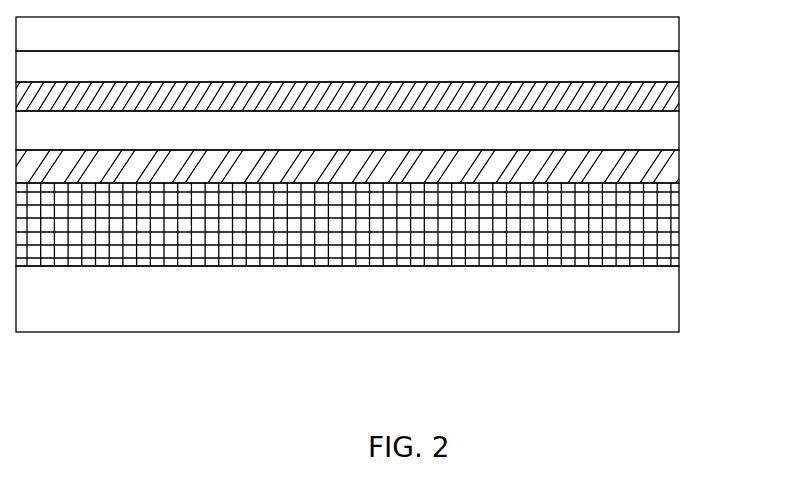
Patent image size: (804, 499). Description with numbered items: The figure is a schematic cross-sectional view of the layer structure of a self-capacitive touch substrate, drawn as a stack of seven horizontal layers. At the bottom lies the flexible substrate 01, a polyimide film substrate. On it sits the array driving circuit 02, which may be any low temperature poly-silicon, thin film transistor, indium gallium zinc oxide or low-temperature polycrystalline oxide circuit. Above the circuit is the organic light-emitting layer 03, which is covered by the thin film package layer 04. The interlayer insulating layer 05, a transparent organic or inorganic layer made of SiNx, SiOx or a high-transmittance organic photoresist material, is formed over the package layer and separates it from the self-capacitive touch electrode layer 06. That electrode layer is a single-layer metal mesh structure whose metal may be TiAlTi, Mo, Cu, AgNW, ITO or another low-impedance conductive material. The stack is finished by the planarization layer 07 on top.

The flexible substrate 01 is at (648, 300).
The array driving circuit 02 is at (635, 238).
The organic light-emitting layer 03 is at (633, 170).
The thin film package layer 04 is at (635, 129).
The interlayer insulating layer 05 is at (660, 98).
The self-capacitive touch electrode layer 06 is at (622, 62).
The planarization layer 07 is at (630, 32).